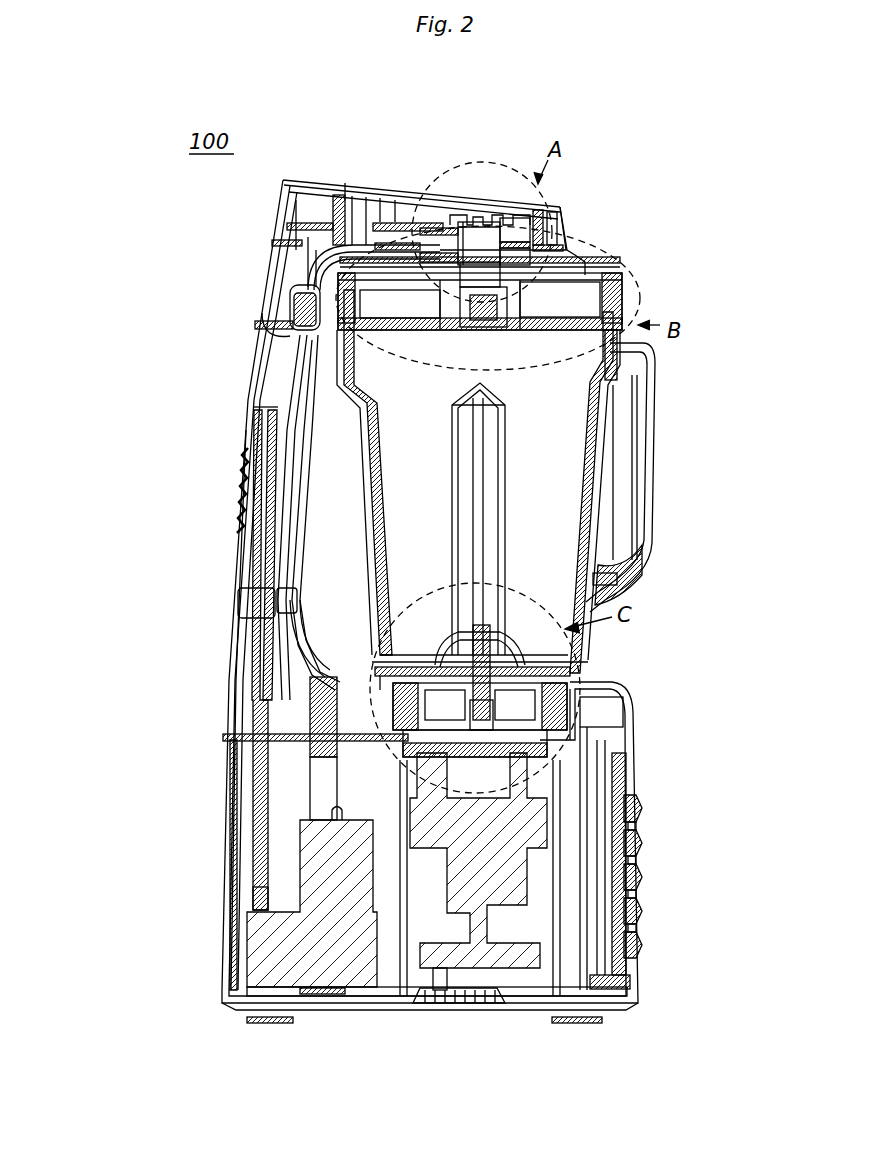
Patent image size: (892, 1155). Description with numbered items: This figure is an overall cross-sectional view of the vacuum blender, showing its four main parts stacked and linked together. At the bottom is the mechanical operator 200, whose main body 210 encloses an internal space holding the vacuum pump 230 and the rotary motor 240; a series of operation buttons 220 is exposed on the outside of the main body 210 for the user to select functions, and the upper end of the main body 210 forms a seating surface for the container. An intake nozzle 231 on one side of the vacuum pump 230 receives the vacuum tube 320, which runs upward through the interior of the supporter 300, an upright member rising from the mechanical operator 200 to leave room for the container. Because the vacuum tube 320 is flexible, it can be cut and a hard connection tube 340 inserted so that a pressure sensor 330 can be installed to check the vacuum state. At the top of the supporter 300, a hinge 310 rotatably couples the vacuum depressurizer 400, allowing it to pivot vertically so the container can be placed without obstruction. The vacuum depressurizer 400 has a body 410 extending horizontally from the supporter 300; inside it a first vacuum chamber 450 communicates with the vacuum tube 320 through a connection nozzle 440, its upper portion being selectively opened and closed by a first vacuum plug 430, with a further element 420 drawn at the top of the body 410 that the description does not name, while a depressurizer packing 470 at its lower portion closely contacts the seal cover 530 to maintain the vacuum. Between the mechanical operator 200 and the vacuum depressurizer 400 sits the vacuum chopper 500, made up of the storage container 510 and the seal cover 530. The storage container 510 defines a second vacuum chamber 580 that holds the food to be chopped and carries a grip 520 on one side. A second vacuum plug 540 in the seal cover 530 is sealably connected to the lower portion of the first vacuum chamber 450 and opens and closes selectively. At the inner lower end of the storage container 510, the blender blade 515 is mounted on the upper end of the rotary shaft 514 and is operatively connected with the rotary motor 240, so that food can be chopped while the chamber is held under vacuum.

The mechanical operator 200 is at (655, 826).
The main body 210 is at (250, 800).
The operation buttons 220 is at (645, 888).
The vacuum pump 230 is at (312, 960).
The intake nozzle 231 is at (262, 918).
The rotary motor 240 is at (495, 888).
The supporter 300 is at (228, 414).
The hinge 310 is at (290, 296).
The vacuum tube 320 is at (246, 542).
The pressure sensor 330 is at (262, 737).
The connection tube 340 is at (262, 773).
The vacuum depressurizer 400 is at (372, 172).
The body 410 is at (345, 183).
The lid hub 420 is at (458, 226).
The first vacuum plug 430 is at (486, 234).
The connection nozzle 440 is at (455, 238).
The first vacuum chamber 450 is at (525, 228).
The depressurizer packing 470 is at (495, 280).
The vacuum chopper 500 is at (660, 388).
The storage container 510 is at (548, 515).
The rotary shaft 514 is at (440, 655).
The blender blade 515 is at (540, 645).
The grip 520 is at (650, 412).
The seal cover 530 is at (520, 298).
The second vacuum plug 540 is at (565, 306).
The second vacuum chamber 580 is at (548, 448).